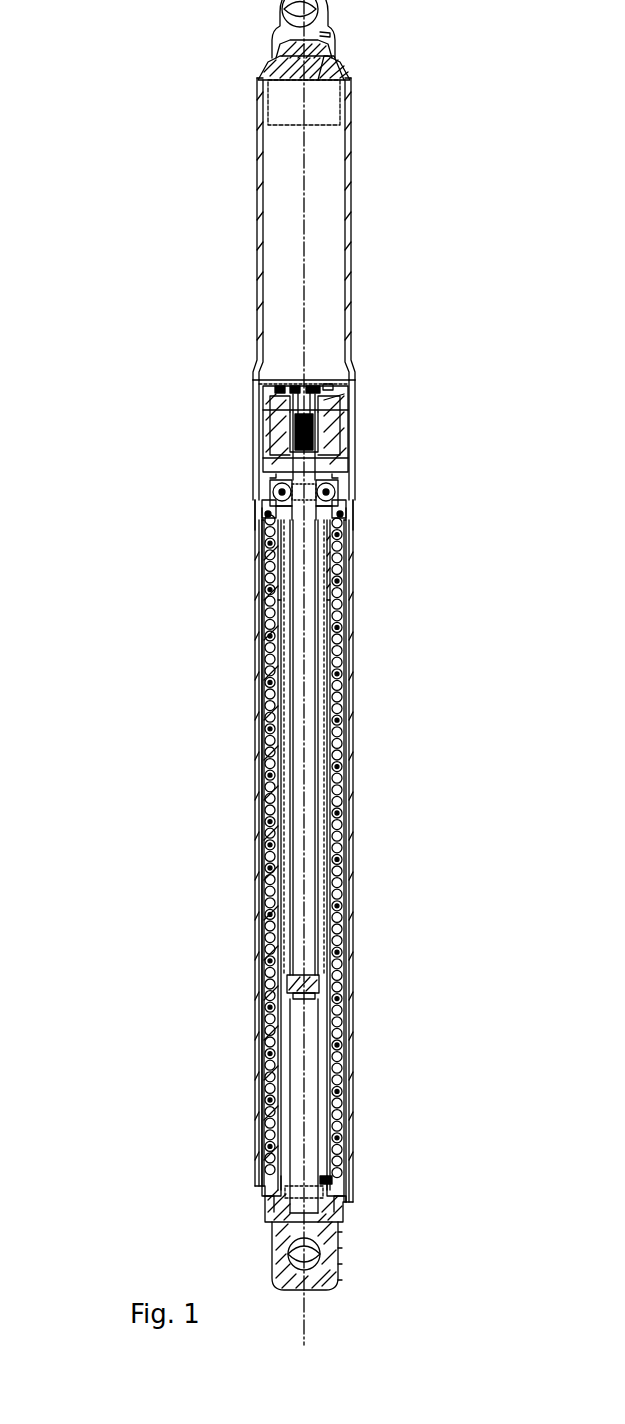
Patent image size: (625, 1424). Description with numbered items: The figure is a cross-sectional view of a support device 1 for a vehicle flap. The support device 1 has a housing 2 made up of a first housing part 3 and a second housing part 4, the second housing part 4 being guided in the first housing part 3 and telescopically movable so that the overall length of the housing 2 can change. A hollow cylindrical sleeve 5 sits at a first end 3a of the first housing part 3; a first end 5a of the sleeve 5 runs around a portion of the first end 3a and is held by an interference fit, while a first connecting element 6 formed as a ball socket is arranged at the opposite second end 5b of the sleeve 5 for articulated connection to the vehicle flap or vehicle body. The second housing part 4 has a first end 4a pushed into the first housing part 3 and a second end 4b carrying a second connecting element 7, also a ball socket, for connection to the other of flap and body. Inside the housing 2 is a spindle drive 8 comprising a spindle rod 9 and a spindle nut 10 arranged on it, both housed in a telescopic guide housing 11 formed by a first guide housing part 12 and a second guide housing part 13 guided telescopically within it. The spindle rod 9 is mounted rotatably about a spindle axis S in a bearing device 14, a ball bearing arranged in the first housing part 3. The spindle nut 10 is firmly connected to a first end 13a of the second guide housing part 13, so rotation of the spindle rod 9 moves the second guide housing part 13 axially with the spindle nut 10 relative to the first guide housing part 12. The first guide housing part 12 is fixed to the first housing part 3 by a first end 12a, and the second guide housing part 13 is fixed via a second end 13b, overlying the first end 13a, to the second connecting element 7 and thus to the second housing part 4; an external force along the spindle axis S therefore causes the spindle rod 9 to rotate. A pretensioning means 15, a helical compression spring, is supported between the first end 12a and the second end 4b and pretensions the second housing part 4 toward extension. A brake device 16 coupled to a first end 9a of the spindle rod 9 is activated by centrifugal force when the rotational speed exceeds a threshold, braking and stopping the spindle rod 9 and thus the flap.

The support device 1 is at (160, 246).
The housing 2 is at (242, 579).
The first housing part 3 is at (352, 758).
The first end of the first housing part 3a is at (312, 385).
The second housing part 4 is at (264, 762).
The first end of the second housing part 4a is at (262, 548).
The second end of the second housing part 4b is at (270, 1198).
The hollow cylindrical sleeve 5 is at (352, 208).
The first end of the sleeve 5a is at (256, 447).
The second end of the sleeve 5b is at (258, 97).
The first connecting element 6 is at (275, 53).
The second connecting element 7 is at (338, 1251).
The spindle drive 8 is at (340, 577).
The spindle rod 9 is at (314, 688).
The first end of the spindle rod 9a is at (312, 462).
The spindle nut 10 is at (268, 608).
The guide housing 11 is at (268, 847).
The first guide housing part 12 is at (330, 828).
The first end of the first guide housing part 12a is at (268, 517).
The second guide housing part 13 is at (343, 898).
The first end of the second guide housing part 13a is at (330, 597).
The second end of the second guide housing part 13b is at (320, 1195).
The bearing device 14 is at (336, 492).
The pretensioning means 15 is at (266, 945).
The brake device 16 is at (345, 431).
The spindle axis S is at (304, 1088).